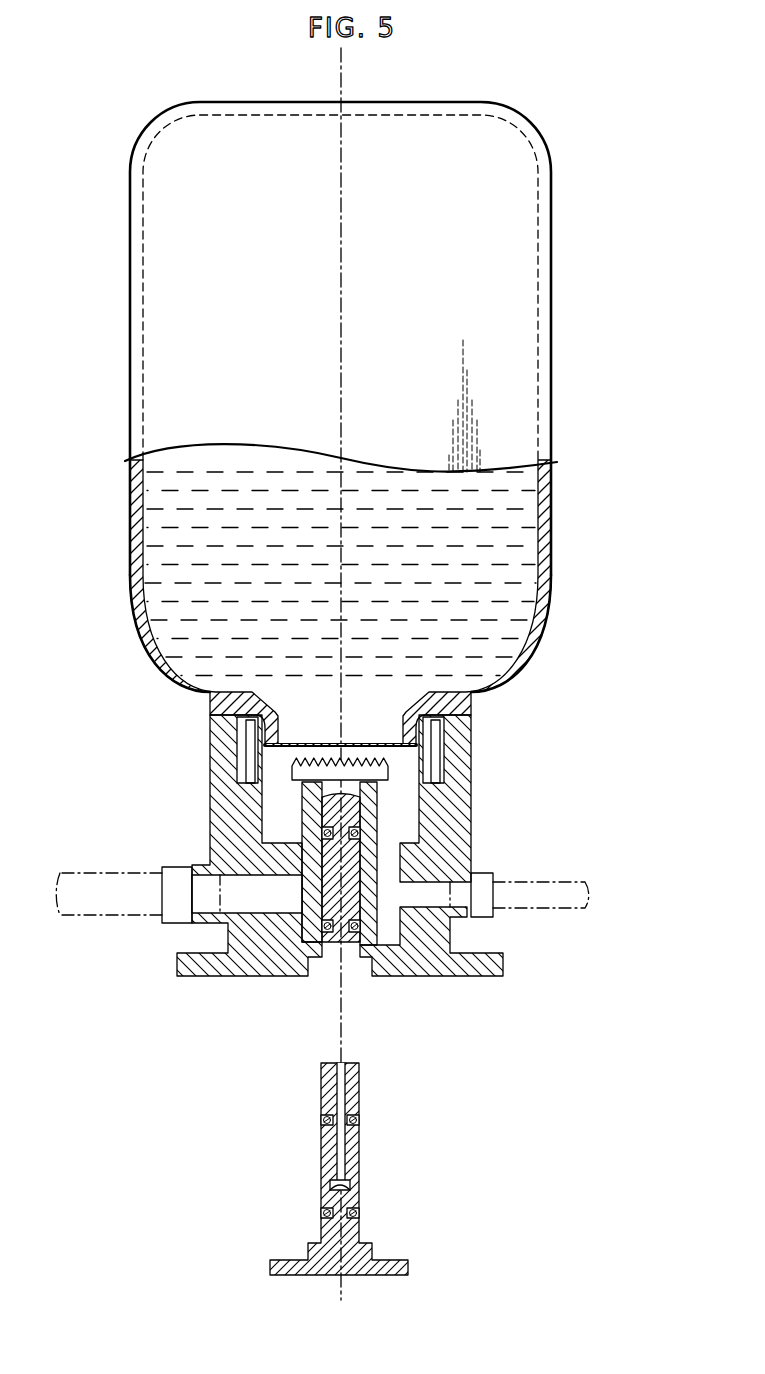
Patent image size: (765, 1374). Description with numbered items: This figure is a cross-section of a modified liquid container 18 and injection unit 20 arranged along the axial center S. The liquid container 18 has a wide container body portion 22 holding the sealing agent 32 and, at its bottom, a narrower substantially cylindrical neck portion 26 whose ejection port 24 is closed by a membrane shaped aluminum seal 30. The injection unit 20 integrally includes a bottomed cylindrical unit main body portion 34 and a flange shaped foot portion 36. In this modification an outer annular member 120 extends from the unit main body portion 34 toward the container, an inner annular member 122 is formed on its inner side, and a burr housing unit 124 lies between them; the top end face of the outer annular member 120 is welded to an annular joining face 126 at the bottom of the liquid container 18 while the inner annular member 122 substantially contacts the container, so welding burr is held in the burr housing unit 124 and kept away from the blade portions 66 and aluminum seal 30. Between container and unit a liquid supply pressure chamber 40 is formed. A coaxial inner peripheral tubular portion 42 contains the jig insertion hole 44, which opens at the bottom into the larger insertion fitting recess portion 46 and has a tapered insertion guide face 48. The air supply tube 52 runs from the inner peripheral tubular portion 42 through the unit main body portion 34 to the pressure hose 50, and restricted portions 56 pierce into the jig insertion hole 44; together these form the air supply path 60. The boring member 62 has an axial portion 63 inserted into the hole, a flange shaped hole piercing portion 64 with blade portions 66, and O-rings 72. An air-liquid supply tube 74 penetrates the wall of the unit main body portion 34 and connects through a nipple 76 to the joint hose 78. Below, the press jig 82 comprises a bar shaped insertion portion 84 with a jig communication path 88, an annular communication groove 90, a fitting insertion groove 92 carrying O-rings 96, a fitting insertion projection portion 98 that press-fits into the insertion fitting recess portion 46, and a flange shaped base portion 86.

The axial center S is at (342, 72).
The liquid container 18 is at (379, 387).
The container body portion 22 is at (553, 320).
The sealing agent 32 is at (527, 538).
The ejection port 24 is at (270, 735).
The aluminum seal 30 is at (352, 742).
The injection unit 20 is at (316, 846).
The neck portion 26 is at (212, 745).
The outer annular member 120 is at (240, 740).
The annular joining face 126 is at (246, 735).
The inner annular member 122 is at (435, 732).
The burr housing unit 124 is at (437, 760).
The inner peripheral tubular portion 42 is at (420, 802).
The liquid supply pressure chamber 40 is at (413, 827).
The unit main body portion 34 is at (471, 853).
The O-rings 72 is at (403, 958).
The air-liquid supply tube 74 is at (460, 927).
The foot portion 36 is at (177, 968).
The air supply tube 52 is at (190, 940).
The insertion guide face 48 is at (322, 968).
The insertion fitting recess portion 46 is at (373, 980).
The axial portion 63 is at (305, 857).
The air supply path 60 is at (246, 905).
The restricted portions 56 is at (296, 894).
The pressure hose 50 is at (85, 870).
The nipple 76 is at (487, 868).
The joint hose 78 is at (522, 910).
The jig insertion hole 44 is at (330, 793).
The hole piercing portion 64 is at (300, 787).
The blade portions 66 is at (386, 766).
The boring member 62 is at (353, 967).
The press jig 82 is at (358, 1201).
The insertion portion 84 is at (361, 1093).
The jig communication path 88 is at (333, 1147).
The communication groove 90 is at (350, 1185).
The fitting insertion groove 92 is at (353, 1118).
The O-rings 96 is at (323, 1120).
The fitting insertion projection portion 98 is at (372, 1247).
The base portion 86 is at (270, 1268).